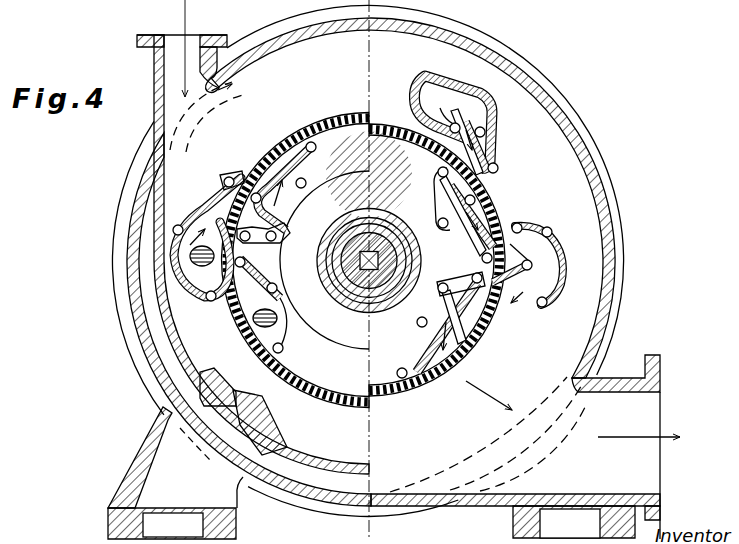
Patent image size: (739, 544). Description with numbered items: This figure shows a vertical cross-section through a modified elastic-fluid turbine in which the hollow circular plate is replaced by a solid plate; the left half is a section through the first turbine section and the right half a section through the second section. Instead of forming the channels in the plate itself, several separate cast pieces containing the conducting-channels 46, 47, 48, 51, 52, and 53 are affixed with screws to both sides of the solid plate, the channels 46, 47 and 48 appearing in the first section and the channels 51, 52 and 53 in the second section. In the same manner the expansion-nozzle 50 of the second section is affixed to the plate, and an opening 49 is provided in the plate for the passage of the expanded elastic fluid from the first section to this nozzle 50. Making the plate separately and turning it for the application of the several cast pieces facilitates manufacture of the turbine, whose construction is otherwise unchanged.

The conducting-channel 46 is at (283, 332).
The conducting-channel 47 is at (193, 270).
The conducting-channel 48 is at (287, 174).
The opening 49 is at (457, 100).
The expansion-nozzle 50 is at (478, 160).
The conducting-channel 51 is at (447, 191).
The conducting-channel 52 is at (546, 254).
The conducting-channel 53 is at (428, 338).